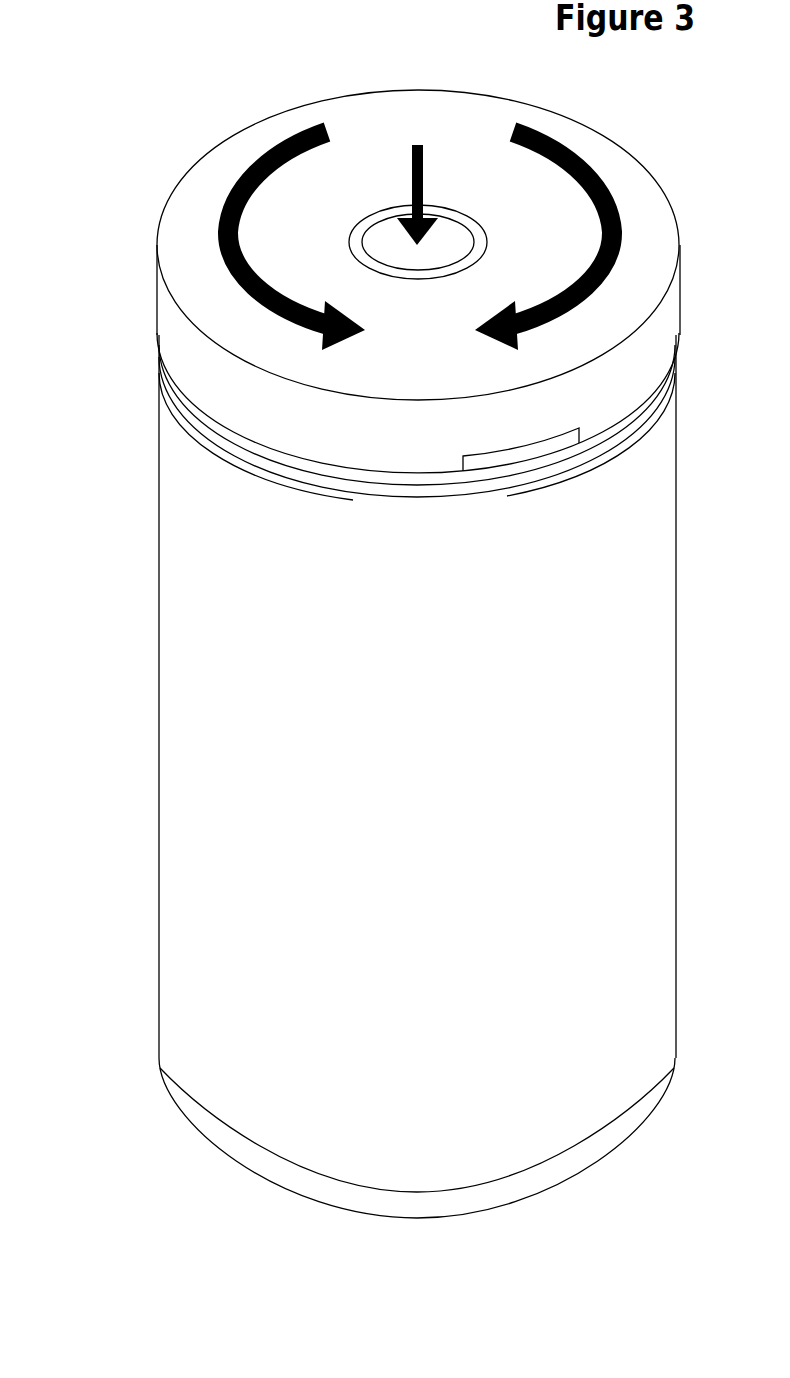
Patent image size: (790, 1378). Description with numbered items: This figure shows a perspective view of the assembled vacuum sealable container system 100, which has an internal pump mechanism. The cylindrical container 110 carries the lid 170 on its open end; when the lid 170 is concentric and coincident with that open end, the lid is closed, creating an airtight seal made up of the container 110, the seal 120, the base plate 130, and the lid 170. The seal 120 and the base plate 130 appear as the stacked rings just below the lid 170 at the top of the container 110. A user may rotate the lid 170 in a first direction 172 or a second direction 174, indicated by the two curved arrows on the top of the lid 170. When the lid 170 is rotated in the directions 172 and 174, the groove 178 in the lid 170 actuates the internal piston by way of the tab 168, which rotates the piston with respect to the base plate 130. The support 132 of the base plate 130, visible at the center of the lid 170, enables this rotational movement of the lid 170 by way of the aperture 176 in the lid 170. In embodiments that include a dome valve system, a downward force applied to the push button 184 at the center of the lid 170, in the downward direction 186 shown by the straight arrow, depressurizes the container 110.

The vacuum sealable container system 100 is at (149, 60).
The container 110 is at (175, 689).
The seal 120 is at (372, 490).
The base plate 130 is at (432, 480).
The support 132 is at (450, 217).
The tab 168 is at (530, 453).
The lid 170 is at (169, 314).
The first direction 172 is at (522, 311).
The second direction 174 is at (317, 311).
The aperture 176 is at (485, 253).
The groove 178 is at (563, 431).
The push button 184 is at (397, 242).
The downward direction 186 is at (412, 193).